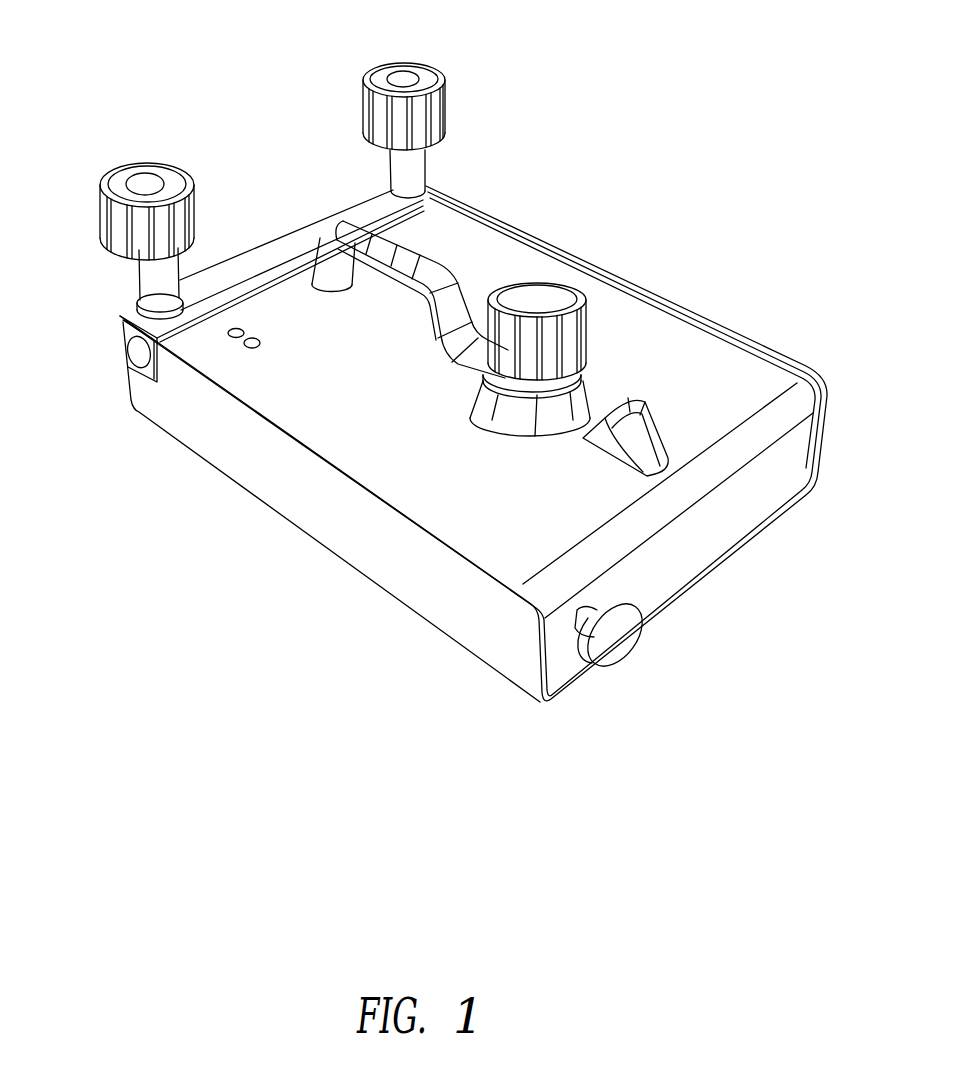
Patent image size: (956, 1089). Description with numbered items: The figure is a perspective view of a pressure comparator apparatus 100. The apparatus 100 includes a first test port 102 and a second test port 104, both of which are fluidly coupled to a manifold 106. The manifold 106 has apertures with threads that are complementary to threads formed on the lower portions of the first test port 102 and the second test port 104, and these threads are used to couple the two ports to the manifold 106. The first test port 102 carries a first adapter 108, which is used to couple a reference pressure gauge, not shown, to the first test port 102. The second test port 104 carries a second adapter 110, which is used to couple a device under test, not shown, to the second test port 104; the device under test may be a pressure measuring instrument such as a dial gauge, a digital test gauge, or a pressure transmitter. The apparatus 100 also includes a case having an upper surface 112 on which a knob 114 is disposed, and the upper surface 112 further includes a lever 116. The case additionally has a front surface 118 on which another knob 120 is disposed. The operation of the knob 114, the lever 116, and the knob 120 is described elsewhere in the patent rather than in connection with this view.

The pressure comparator apparatus 100 is at (650, 84).
The first test port 102 is at (152, 282).
The second test port 104 is at (413, 163).
The manifold 106 is at (278, 243).
The first adapter 108 is at (104, 234).
The second adapter 110 is at (442, 106).
The upper surface 112 is at (722, 360).
The knob 114 is at (553, 297).
The lever 116 is at (642, 428).
The front surface 118 is at (720, 540).
The knob 120 is at (617, 653).